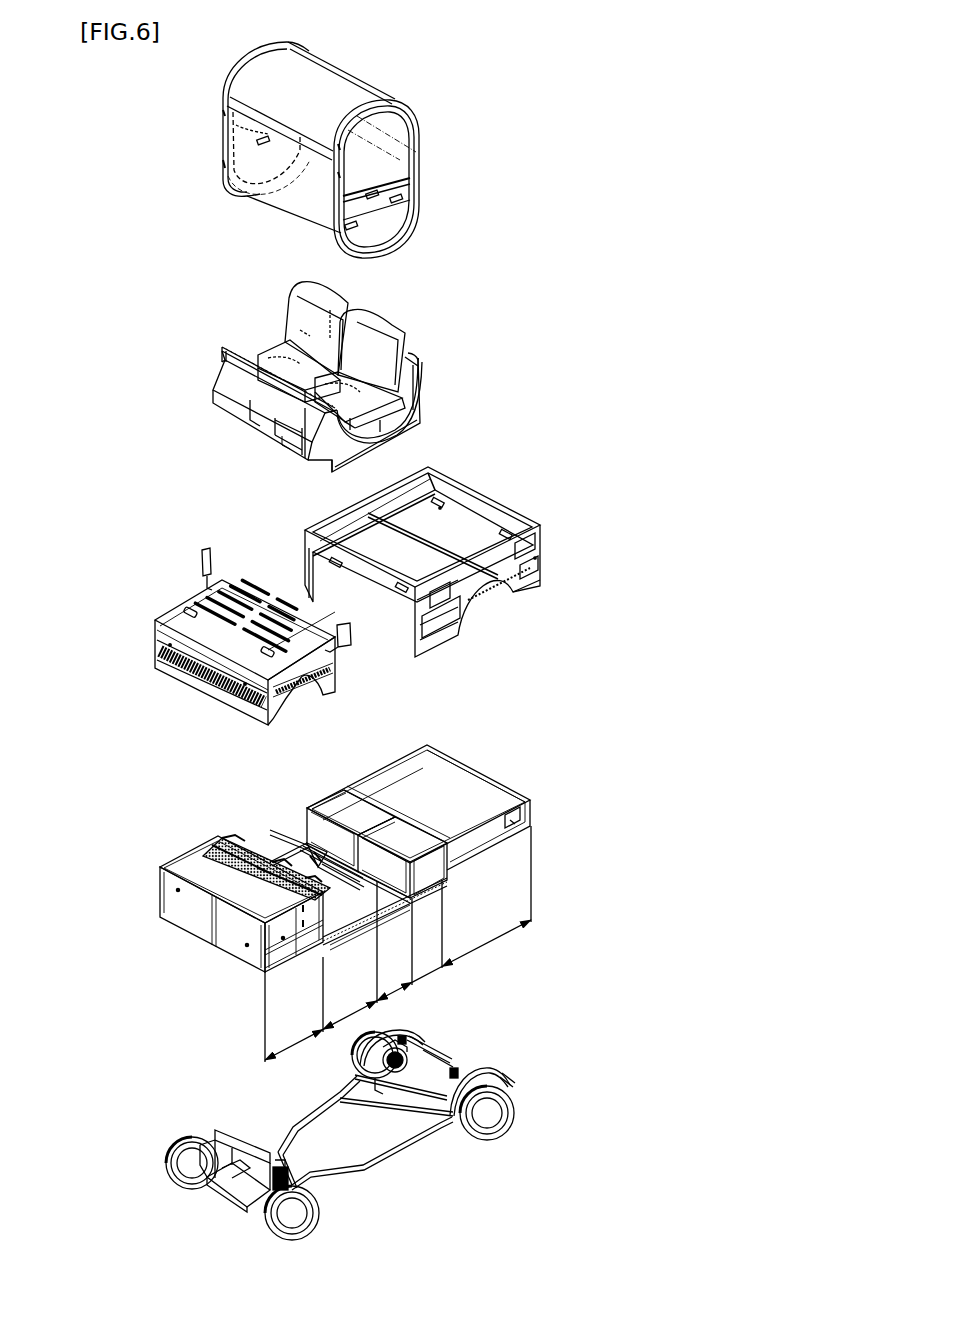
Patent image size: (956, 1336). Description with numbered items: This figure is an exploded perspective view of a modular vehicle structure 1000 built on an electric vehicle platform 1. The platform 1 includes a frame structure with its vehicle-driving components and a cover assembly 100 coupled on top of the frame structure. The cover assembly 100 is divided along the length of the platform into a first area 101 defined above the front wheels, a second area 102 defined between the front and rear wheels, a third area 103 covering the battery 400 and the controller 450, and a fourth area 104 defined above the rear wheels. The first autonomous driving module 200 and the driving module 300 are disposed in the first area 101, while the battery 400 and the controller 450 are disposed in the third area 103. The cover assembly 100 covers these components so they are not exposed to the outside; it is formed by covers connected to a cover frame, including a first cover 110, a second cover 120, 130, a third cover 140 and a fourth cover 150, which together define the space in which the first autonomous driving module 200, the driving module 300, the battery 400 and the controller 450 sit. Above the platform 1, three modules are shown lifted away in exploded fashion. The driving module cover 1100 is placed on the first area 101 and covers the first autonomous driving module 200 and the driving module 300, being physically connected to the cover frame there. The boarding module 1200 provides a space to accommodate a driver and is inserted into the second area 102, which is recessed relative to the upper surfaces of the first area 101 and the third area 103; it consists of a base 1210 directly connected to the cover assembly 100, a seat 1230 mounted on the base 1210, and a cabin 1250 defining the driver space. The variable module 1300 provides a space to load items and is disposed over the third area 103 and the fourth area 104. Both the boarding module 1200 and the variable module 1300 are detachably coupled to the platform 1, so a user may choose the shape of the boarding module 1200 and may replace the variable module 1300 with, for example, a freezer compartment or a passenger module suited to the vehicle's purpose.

The vehicle upper body 1000 is at (654, 233).
The boarding module 1200 is at (521, 160).
The cabin 1250 is at (421, 155).
The seat 1230 is at (392, 342).
The base 1210 is at (418, 404).
The variable module 1300 is at (520, 510).
The driving module cover 1100 is at (172, 600).
The cover assembly 100 is at (512, 778).
The third cover 140 is at (447, 763).
The second cover 130 is at (343, 797).
The second cover 120 is at (433, 847).
The battery 400 is at (392, 822).
The controller 450 is at (320, 801).
The fourth cover 150 is at (387, 907).
The first autonomous driving module 200 is at (170, 860).
The first cover 110 is at (190, 863).
The driving module 300 is at (206, 834).
The first area 101 is at (294, 1014).
The second area 102 is at (358, 956).
The third area 103 is at (413, 941).
The fourth area 104 is at (486, 898).
The electric vehicle platform 1 is at (548, 813).